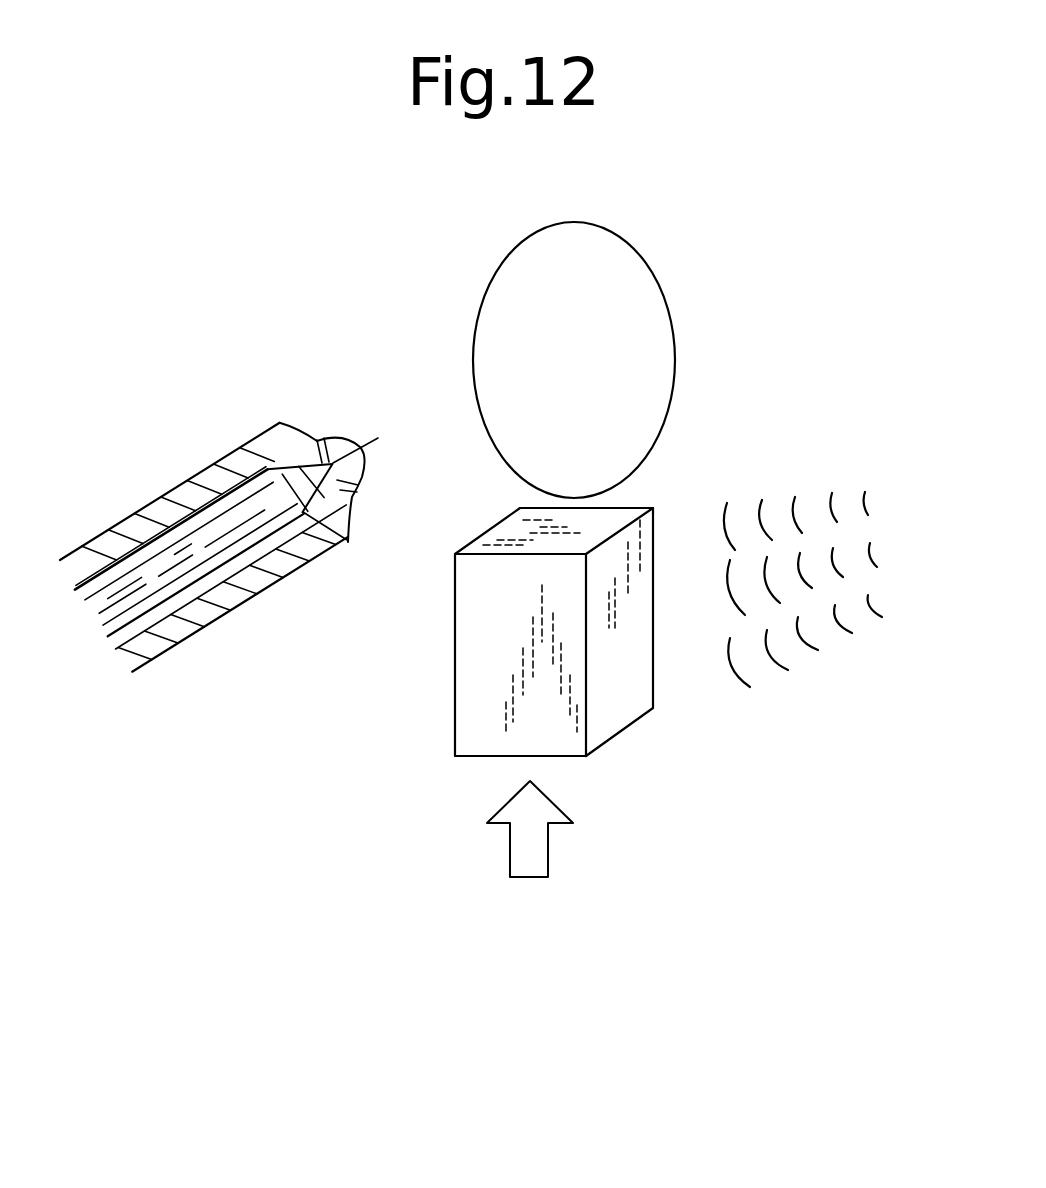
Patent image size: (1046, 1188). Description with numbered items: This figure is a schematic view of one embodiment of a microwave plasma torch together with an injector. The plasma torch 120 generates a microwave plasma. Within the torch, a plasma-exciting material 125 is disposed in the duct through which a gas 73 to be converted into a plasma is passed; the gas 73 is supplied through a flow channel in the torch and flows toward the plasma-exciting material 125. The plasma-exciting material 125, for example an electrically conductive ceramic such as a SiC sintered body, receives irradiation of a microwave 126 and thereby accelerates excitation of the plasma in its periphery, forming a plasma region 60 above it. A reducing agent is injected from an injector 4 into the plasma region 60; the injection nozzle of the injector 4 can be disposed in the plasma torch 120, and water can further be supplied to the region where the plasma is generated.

The injector 4 is at (203, 454).
The plasma region 60 is at (663, 290).
The plasma-exciting material 125 is at (455, 675).
The microwave 126 is at (812, 479).
The gas 73 is at (548, 852).
The plasma torch 120 is at (449, 865).